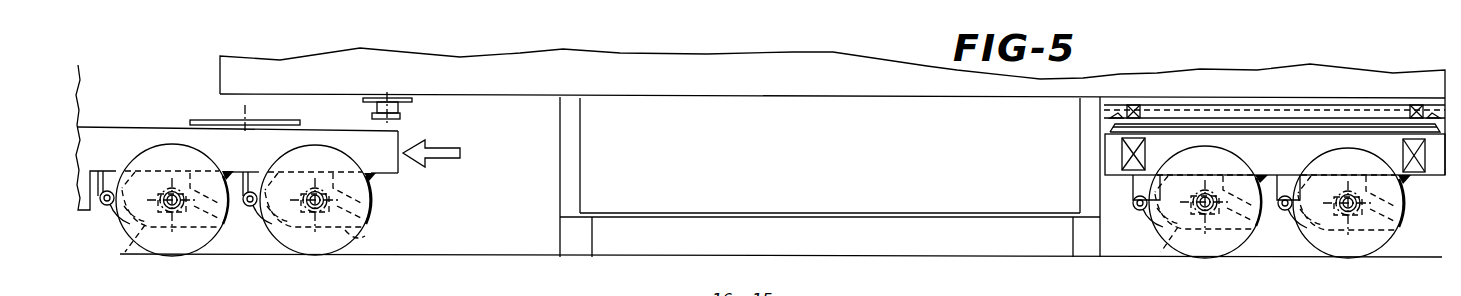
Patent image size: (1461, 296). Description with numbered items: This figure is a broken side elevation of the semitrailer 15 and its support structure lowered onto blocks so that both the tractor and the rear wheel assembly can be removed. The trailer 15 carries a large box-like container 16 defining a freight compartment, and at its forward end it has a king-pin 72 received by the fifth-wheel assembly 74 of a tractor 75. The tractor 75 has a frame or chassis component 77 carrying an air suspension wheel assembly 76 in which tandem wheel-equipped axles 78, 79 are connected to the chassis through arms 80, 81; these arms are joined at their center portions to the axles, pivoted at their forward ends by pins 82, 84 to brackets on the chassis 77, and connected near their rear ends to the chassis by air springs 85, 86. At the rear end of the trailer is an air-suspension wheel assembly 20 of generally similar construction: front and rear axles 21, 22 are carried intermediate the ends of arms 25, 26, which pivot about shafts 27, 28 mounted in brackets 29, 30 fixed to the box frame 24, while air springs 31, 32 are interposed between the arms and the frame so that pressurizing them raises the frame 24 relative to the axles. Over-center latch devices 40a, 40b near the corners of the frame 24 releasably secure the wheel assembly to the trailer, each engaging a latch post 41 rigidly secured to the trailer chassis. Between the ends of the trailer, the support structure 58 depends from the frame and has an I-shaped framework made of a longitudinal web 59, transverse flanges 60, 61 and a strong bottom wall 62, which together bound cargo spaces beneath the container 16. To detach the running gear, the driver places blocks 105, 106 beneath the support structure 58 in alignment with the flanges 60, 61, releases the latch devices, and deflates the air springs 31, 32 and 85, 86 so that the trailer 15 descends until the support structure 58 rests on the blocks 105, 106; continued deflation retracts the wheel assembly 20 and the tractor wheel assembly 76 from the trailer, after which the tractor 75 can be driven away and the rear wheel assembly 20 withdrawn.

The semitrailer 15 is at (681, 79).
The box-like container 16 is at (580, 58).
The air-suspension wheel assembly 20 is at (1313, 146).
The front axle 21 is at (1205, 212).
The rear axle 22 is at (1348, 213).
The box frame 24 is at (1237, 136).
The arm 25 is at (1168, 258).
The arm 26 is at (1396, 236).
The shaft 27 is at (1137, 210).
The shaft 28 is at (1283, 211).
The bracket 29 is at (1143, 185).
The bracket 30 is at (1285, 184).
The air spring 31 is at (1266, 176).
The air spring 32 is at (1407, 181).
The over-center latch device 40a is at (1113, 155).
The over-center latch device 40b is at (1433, 149).
The latch post 41 is at (1133, 105).
The support structure 58 is at (654, 158).
The web 59 is at (841, 111).
The flange 60 is at (580, 121).
The flange 61 is at (1083, 107).
The bottom wall 62 is at (773, 213).
The king-pin 72 is at (399, 107).
The fifth-wheel assembly 74 is at (193, 120).
The tractor 75 is at (88, 104).
The air suspension wheel assembly 76 is at (311, 131).
The chassis component 77 is at (130, 134).
The wheel-equipped axle 78 is at (174, 209).
The wheel-equipped axle 79 is at (315, 209).
The arm 80 is at (127, 243).
The arm 81 is at (362, 237).
The pin 82 is at (104, 207).
The pin 84 is at (250, 208).
The air spring 85 is at (228, 178).
The air spring 86 is at (374, 186).
The block 105 is at (582, 237).
The block 106 is at (1073, 230).